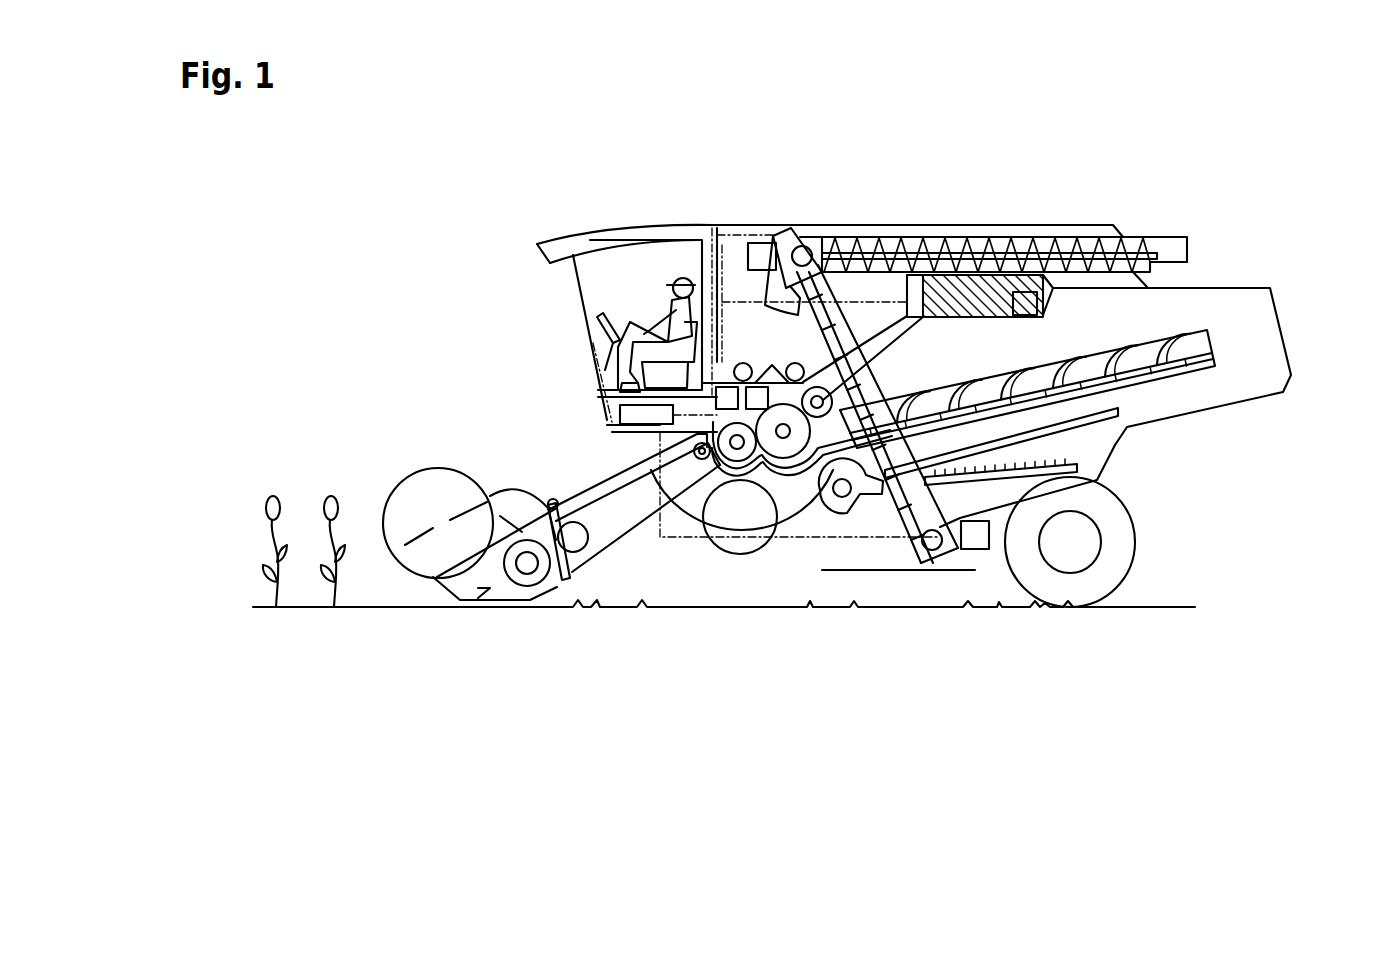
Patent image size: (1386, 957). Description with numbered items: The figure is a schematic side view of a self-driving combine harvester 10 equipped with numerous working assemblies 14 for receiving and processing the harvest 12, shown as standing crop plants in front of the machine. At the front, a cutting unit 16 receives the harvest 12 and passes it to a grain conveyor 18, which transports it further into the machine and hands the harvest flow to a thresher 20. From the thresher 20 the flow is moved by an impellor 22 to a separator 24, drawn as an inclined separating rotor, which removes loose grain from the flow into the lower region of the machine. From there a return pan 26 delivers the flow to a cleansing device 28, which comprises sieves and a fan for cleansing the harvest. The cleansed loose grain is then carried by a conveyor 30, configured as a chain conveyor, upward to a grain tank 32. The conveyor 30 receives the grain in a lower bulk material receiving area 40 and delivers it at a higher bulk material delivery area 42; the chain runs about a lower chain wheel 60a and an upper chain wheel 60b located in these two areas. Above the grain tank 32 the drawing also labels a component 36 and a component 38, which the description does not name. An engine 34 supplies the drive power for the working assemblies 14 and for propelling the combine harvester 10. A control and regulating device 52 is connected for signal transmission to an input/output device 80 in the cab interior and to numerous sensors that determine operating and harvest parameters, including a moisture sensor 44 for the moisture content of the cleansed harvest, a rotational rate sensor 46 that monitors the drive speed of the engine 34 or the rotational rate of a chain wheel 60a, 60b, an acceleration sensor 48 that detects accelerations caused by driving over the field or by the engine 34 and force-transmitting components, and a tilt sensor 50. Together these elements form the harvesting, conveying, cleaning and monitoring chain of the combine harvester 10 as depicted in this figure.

The combine harvester 10 is at (1285, 155).
The harvest 12 is at (267, 540).
The working assemblies 14 is at (914, 416).
The cutting unit 16 is at (403, 450).
The grain conveyor 18 is at (620, 527).
The thresher 20 is at (804, 484).
The impellor 22 is at (875, 385).
The separator 24 is at (1167, 373).
The return pan 26 is at (1085, 430).
The cleansing device 28 is at (898, 545).
The conveyor 30 is at (846, 303).
The grain tank 32 is at (737, 240).
The engine 34 is at (1006, 275).
The unloading tube outlet 36 is at (1148, 237).
The unloading auger 38 is at (1090, 237).
The bulk material receiving area 40 is at (962, 567).
The bulk material delivery area 42 is at (793, 218).
The moisture sensor 44 is at (990, 540).
The rotational rate sensor 46 is at (712, 238).
The acceleration sensor 48 is at (730, 462).
The tilt sensor 50 is at (760, 460).
The control and regulating device 52 is at (608, 423).
The lower chain wheel 60a is at (933, 550).
The upper chain wheel 60b is at (808, 244).
The input/output device 80 is at (592, 328).